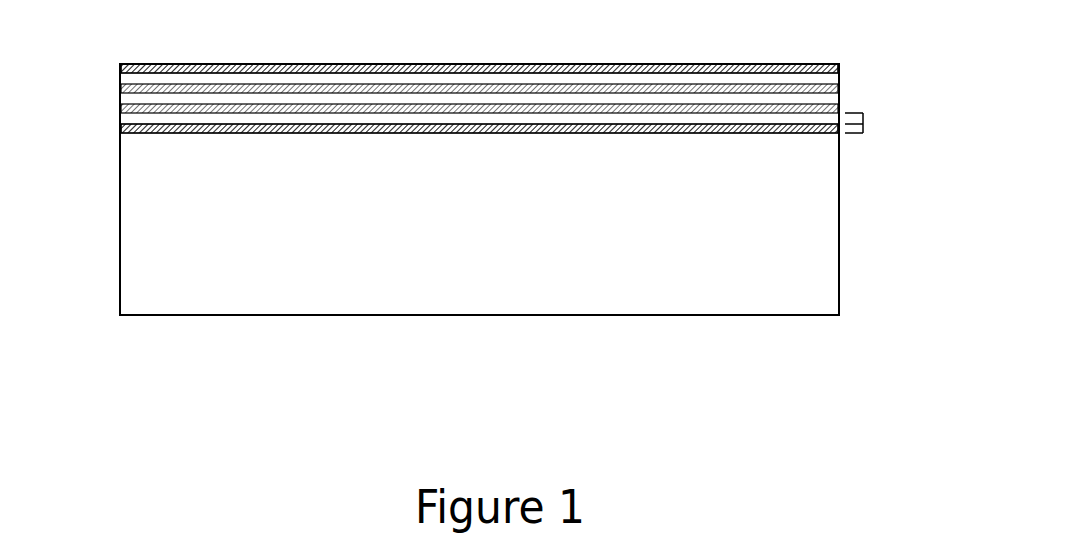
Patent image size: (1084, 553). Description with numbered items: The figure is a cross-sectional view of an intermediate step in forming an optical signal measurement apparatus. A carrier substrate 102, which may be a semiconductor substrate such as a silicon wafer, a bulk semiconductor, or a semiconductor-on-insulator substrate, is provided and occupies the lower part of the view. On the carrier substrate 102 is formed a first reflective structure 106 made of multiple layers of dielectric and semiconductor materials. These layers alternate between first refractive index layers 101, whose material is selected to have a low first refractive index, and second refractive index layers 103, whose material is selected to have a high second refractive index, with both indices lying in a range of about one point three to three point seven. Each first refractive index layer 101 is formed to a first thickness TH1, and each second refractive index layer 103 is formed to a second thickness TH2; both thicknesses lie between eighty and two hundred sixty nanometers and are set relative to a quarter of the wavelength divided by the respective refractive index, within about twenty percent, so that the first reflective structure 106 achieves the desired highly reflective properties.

The first refractive index layers 101 is at (155, 132).
The carrier substrate 102 is at (507, 249).
The second refractive index layers 103 is at (152, 78).
The first reflective structure 106 is at (112, 63).
The first thickness TH1 is at (863, 128).
The second thickness TH2 is at (863, 118).